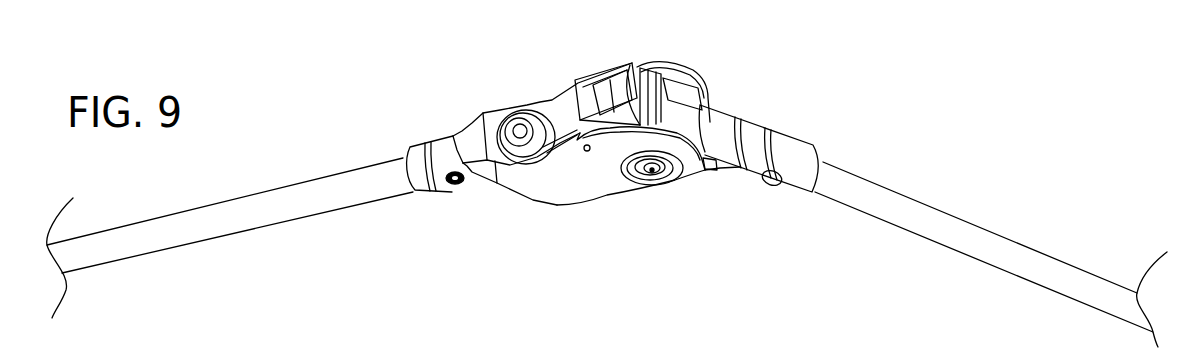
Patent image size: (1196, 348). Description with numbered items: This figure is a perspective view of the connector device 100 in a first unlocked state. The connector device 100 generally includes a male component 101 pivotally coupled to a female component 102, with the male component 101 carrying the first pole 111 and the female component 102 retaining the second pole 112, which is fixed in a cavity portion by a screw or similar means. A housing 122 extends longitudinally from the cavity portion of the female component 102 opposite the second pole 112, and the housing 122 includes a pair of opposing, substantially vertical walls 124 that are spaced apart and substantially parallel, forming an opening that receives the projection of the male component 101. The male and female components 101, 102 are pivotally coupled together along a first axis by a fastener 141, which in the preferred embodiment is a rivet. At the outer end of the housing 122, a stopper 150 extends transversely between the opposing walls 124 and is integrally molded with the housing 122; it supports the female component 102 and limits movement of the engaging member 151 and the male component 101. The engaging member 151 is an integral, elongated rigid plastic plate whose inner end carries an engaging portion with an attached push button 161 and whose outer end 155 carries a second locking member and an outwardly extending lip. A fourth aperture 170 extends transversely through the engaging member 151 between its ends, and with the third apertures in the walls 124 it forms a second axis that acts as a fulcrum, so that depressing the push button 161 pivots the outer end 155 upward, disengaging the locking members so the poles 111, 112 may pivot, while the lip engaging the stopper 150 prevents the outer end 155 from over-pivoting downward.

The connector device 100 is at (700, 55).
The male component 101 is at (772, 128).
The female component 102 is at (495, 182).
The first pole 111 is at (967, 233).
The second pole 112 is at (315, 183).
The housing 122 is at (592, 166).
The walls 124 is at (613, 180).
The fastener 141 is at (653, 172).
The stopper 150 is at (699, 76).
The engaging member 151 is at (578, 90).
The outer end 155 is at (630, 68).
The push button 161 is at (519, 131).
The fourth aperture 170 is at (585, 155).